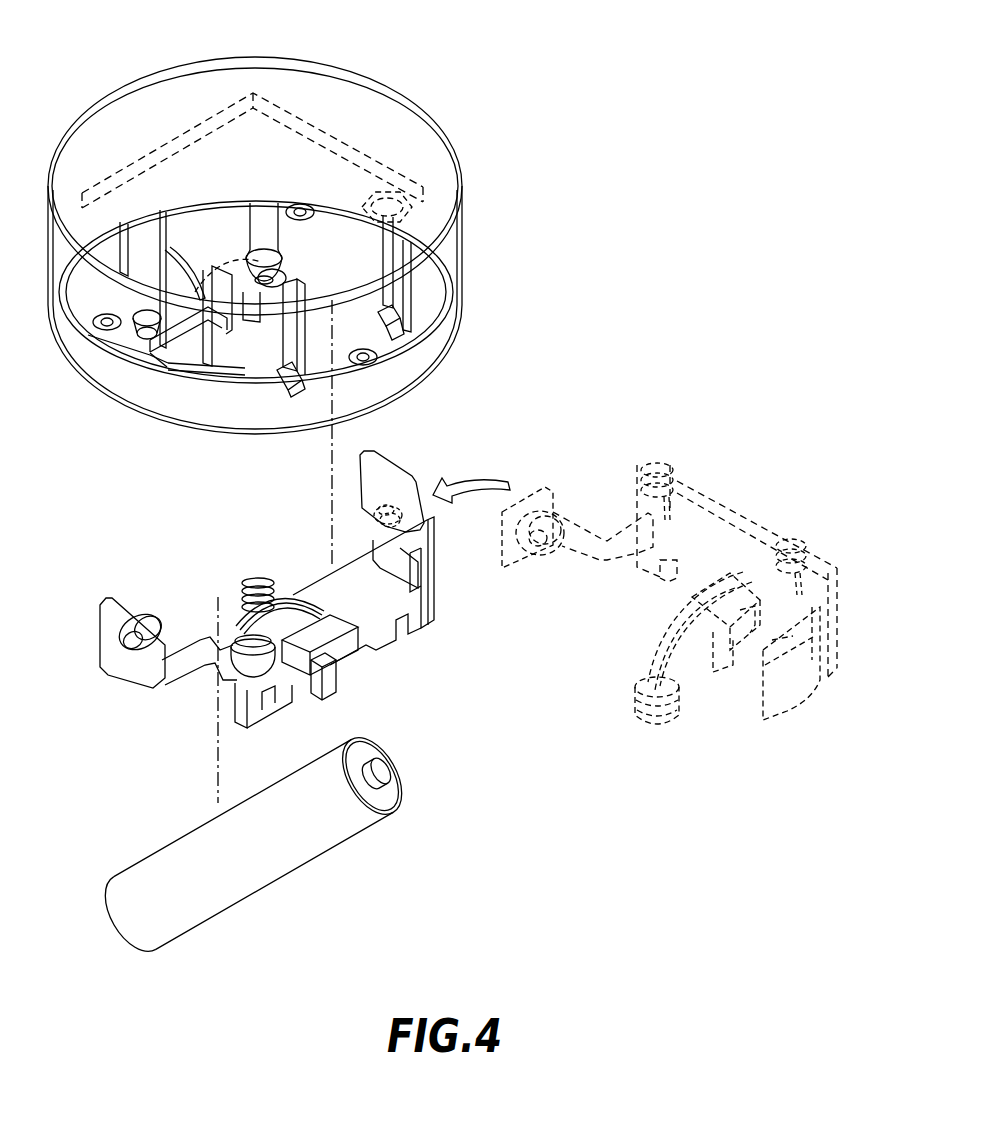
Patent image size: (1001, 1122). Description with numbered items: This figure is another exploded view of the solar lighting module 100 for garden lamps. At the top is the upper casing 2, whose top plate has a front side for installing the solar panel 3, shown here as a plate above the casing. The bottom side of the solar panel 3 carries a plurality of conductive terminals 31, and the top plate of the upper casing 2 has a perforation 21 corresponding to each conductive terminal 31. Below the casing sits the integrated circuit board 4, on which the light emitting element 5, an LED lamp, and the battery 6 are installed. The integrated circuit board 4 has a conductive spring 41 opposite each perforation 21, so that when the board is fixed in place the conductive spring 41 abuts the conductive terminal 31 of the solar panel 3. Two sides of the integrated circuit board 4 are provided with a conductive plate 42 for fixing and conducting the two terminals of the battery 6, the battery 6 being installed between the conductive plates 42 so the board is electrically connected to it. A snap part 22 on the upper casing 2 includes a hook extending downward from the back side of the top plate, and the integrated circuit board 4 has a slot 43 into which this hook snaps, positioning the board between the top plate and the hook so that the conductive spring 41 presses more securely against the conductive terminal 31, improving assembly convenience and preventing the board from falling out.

The solar lighting module 100 is at (568, 52).
The upper casing 2 is at (446, 246).
The solar panel 3 is at (370, 157).
The perforation 21 is at (392, 182).
The conductive terminal 31 is at (417, 180).
The snap part 22 is at (395, 330).
The integrated circuit board 4 is at (367, 643).
The conductive spring 41 is at (255, 578).
The conductive plate 42 is at (124, 600).
The slot 43 is at (383, 634).
The light emitting element 5 is at (253, 675).
The battery 6 is at (181, 845).